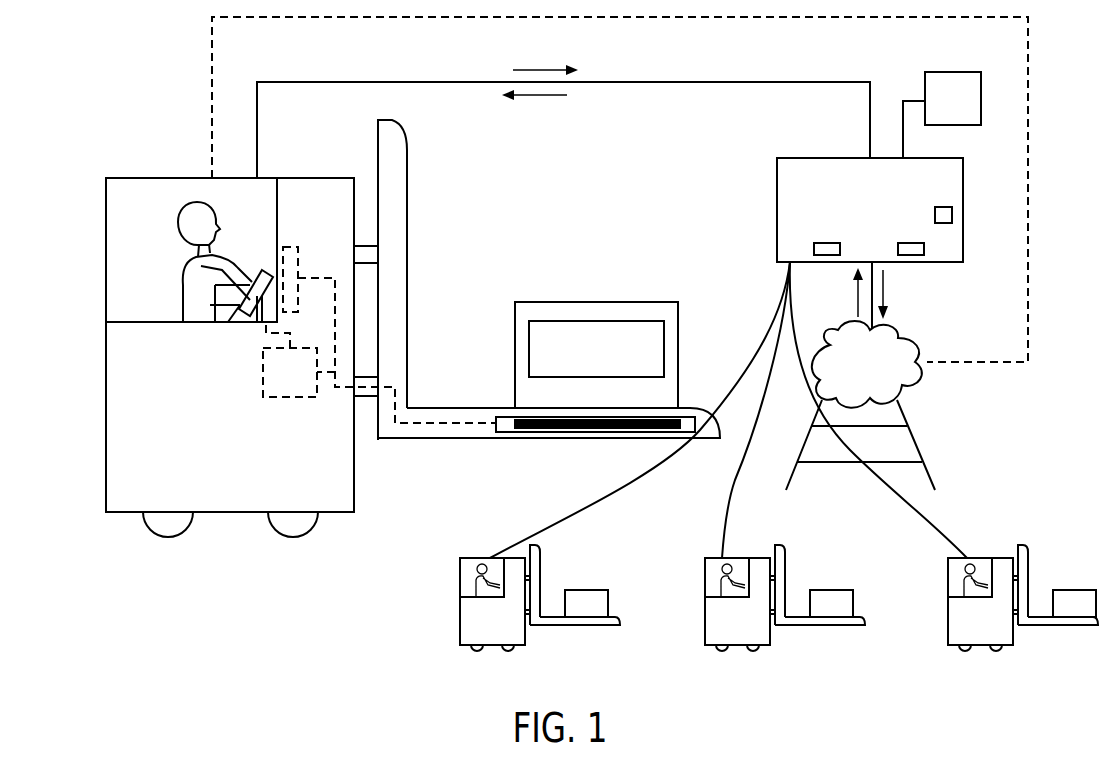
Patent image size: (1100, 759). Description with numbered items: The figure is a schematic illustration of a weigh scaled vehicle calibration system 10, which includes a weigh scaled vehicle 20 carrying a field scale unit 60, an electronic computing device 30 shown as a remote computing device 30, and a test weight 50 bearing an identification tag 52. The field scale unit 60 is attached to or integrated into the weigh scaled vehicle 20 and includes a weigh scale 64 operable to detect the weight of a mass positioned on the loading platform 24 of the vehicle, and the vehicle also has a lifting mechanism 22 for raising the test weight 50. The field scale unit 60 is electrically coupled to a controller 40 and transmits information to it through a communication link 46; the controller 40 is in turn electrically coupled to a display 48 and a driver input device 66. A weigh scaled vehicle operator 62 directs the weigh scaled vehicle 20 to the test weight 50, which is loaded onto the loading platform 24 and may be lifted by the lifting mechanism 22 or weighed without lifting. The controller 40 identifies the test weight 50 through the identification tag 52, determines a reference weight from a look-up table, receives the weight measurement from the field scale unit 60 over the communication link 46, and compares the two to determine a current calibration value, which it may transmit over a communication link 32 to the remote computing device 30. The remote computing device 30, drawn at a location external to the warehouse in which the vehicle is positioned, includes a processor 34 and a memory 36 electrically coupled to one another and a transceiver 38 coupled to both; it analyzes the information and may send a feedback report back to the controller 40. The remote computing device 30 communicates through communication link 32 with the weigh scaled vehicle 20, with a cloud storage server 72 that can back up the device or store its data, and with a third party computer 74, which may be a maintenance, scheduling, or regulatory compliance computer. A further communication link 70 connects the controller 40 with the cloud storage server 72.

The weigh scaled vehicle calibration system 10 is at (92, 78).
The weigh scaled vehicle 20 is at (106, 396).
The lifting mechanism 22 is at (407, 210).
The loading platform 24 is at (450, 408).
The electronic computing device 30 is at (777, 198).
The communication link 32 is at (682, 84).
The processor 34 is at (826, 256).
The memory 36 is at (912, 256).
The transceiver 38 is at (952, 215).
The controller 40 is at (262, 383).
The communication link 46 is at (263, 336).
The display 48 is at (298, 247).
The test weight 50 is at (678, 325).
The identification tag 52 is at (600, 321).
The field scale unit 60 is at (586, 438).
The weigh scaled vehicle operator 62 is at (125, 264).
The weigh scale 64 is at (680, 420).
The driver input device 66 is at (242, 312).
The communication link 70 is at (1030, 186).
The cloud storage server 72 is at (950, 420).
The third party computer 74 is at (942, 115).